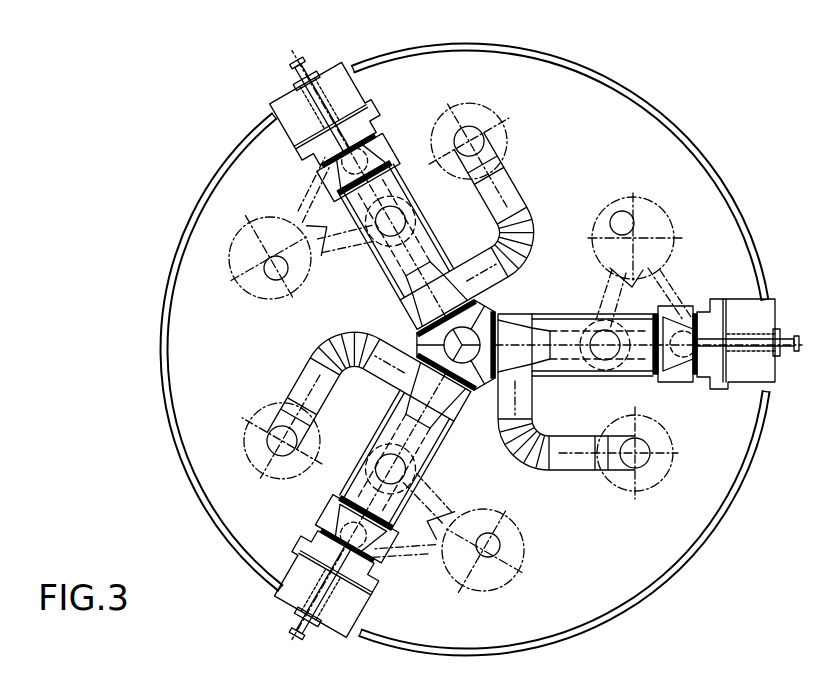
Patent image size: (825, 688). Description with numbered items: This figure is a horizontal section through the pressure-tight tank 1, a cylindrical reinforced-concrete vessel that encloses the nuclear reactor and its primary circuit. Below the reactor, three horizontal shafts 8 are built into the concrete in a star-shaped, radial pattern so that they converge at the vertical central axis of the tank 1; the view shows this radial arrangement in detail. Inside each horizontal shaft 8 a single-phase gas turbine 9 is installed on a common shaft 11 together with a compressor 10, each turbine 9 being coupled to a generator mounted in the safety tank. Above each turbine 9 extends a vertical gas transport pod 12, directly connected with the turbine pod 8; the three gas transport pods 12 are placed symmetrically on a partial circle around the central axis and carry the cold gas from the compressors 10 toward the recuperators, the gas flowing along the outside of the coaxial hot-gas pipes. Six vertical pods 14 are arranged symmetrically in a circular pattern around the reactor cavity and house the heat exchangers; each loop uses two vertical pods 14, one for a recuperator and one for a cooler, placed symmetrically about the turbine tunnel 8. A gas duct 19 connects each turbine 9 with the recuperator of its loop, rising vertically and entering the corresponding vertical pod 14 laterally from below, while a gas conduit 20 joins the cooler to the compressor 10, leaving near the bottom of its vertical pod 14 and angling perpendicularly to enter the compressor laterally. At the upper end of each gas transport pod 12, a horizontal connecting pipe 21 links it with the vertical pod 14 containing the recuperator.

The pressure-tight tank 1 is at (680, 180).
The horizontal shaft 8 is at (570, 378).
The gas turbine 9 is at (612, 352).
The compressor 10 is at (513, 338).
The common shaft 11 is at (785, 342).
The gas transport pod 12 is at (605, 360).
The vertical pod 14 is at (653, 227).
The gas duct 19 is at (660, 275).
The gas conduit 20 is at (576, 460).
The horizontal connecting pipe 21 is at (610, 307).